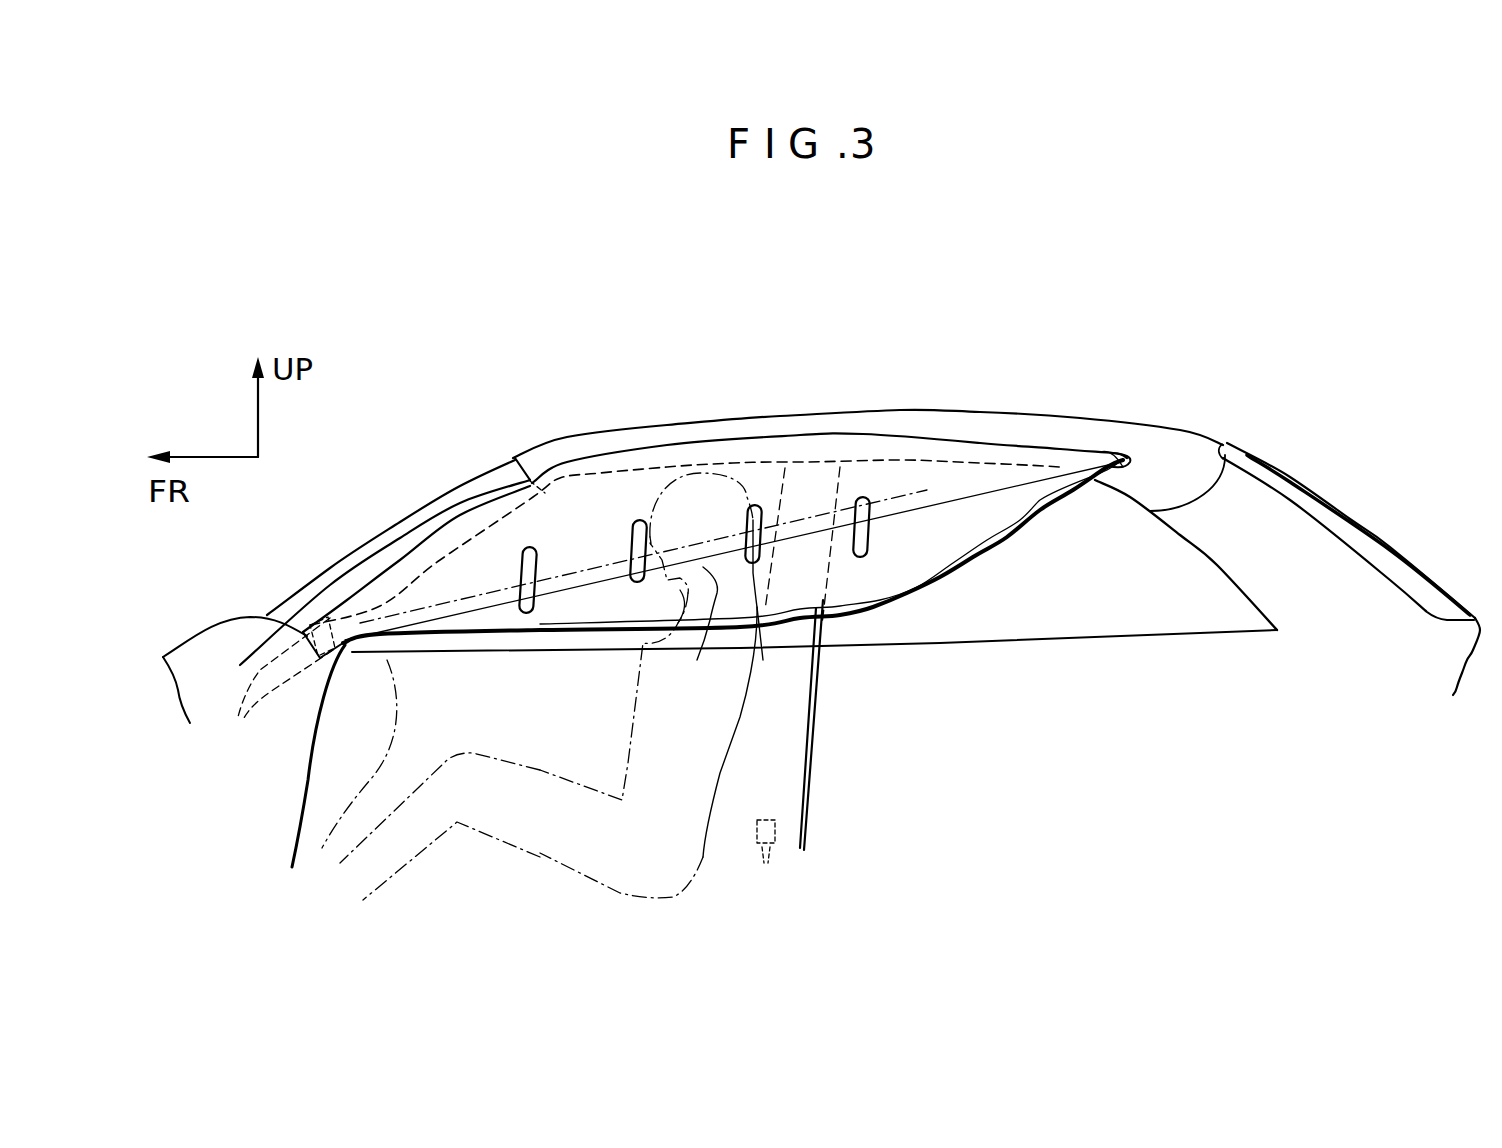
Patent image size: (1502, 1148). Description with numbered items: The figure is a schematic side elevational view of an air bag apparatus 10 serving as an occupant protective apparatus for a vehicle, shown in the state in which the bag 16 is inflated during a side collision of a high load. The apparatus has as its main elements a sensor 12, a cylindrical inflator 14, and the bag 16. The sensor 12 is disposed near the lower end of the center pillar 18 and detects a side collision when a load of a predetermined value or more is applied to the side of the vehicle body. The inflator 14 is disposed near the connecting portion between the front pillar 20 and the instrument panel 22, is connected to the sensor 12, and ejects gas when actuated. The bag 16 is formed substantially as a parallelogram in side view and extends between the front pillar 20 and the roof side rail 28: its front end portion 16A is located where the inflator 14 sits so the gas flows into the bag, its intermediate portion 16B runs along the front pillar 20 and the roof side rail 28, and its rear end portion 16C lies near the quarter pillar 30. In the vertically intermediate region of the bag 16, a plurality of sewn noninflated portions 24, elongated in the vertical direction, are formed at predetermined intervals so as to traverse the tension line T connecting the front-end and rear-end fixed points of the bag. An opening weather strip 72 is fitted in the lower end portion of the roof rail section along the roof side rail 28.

The air bag apparatus 10 is at (999, 410).
The sensor 12 is at (767, 817).
The inflator 14 is at (287, 678).
The bag 16 is at (853, 420).
The front end portion of the bag 16A is at (346, 618).
The intermediate portion of the bag 16B is at (697, 660).
The rear end portion of the bag 16C is at (1113, 455).
The center pillar 18 is at (832, 666).
The front pillar 20 is at (452, 560).
The instrument panel 22 is at (387, 660).
The noninflated portions 24 is at (533, 550).
The roof side rail 28 is at (872, 418).
The quarter pillar 30 is at (1185, 551).
The opening weather strip 72 is at (427, 543).
The tension line T is at (940, 498).